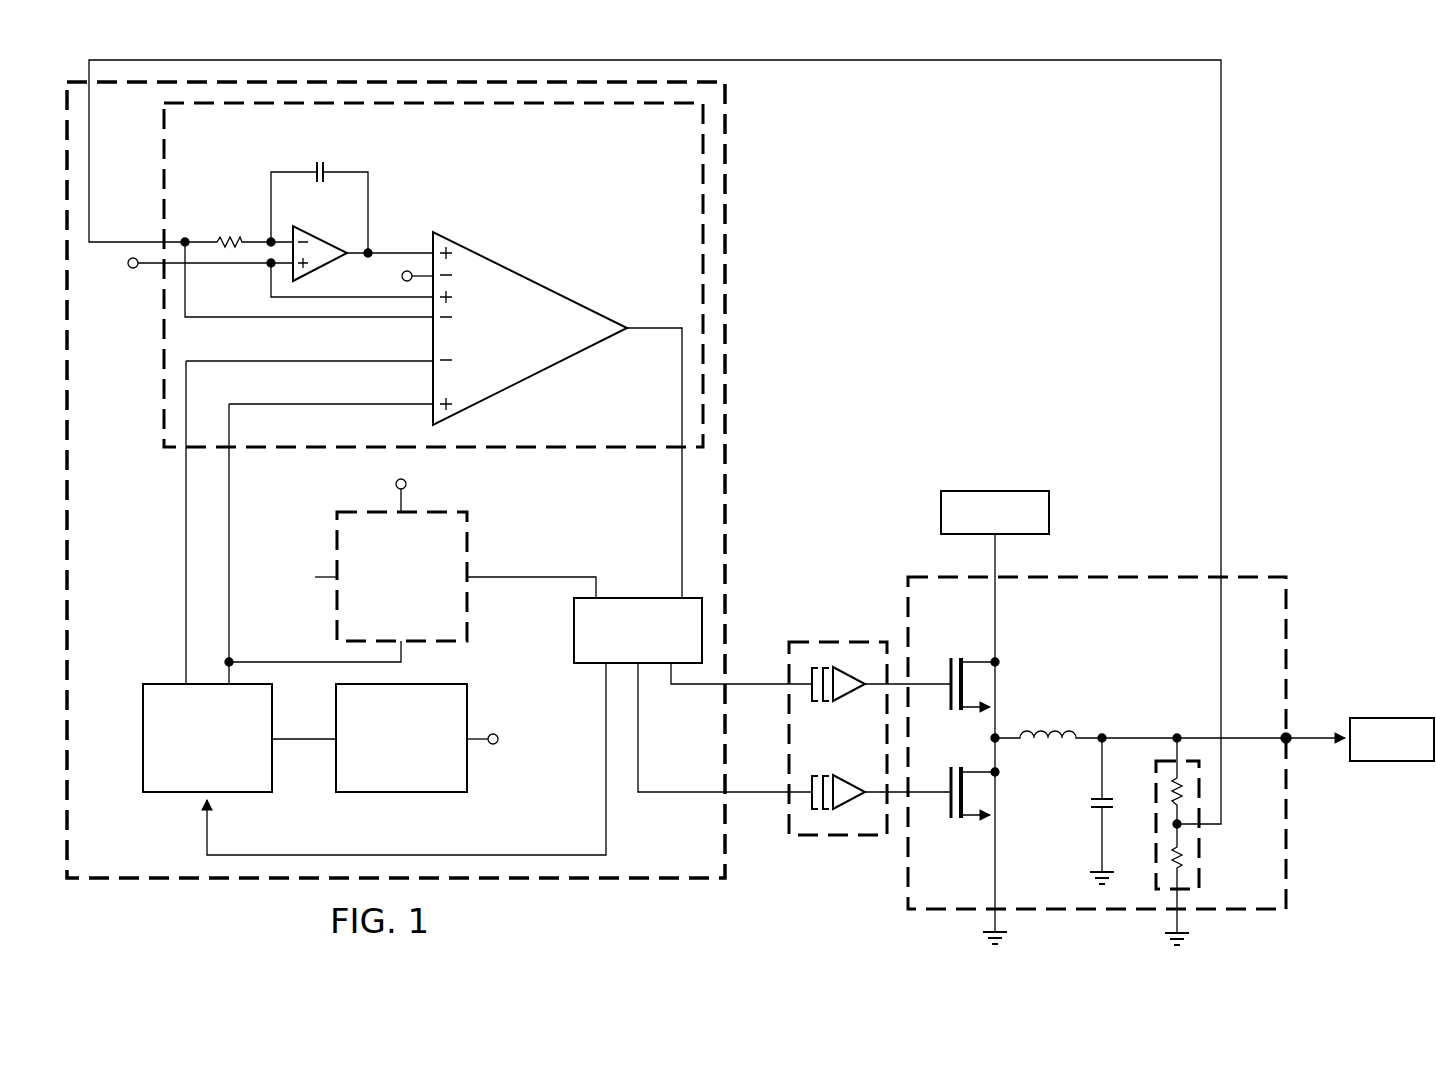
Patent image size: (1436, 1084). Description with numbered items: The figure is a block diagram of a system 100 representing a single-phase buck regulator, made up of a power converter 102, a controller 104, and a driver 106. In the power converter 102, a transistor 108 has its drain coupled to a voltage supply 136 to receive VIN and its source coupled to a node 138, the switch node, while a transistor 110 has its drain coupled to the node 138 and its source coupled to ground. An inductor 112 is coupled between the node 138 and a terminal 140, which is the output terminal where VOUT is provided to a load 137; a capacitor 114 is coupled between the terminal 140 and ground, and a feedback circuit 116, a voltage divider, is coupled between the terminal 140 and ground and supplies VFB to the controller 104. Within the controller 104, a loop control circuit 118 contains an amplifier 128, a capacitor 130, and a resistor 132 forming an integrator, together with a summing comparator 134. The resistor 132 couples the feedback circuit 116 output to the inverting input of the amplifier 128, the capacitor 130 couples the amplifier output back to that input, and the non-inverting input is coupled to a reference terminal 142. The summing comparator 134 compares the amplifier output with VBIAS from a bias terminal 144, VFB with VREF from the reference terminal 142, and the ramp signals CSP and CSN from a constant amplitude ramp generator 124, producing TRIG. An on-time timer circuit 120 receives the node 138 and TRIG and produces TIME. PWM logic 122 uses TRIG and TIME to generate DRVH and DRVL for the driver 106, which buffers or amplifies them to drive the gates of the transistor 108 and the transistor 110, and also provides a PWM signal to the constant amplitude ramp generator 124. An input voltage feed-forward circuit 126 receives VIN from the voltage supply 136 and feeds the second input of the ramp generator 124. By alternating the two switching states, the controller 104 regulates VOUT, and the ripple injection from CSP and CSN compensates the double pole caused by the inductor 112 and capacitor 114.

The system 100 is at (1310, 121).
The power converter 102 is at (1150, 574).
The controller 104 is at (729, 245).
The driver 106 is at (849, 640).
The transistor 108 is at (947, 668).
The transistor 110 is at (947, 806).
The inductor 112 is at (1048, 726).
The capacitor 114 is at (1093, 804).
The feedback circuit 116 is at (1207, 836).
The loop control circuit 118 is at (163, 369).
The on-time timer circuit 120 is at (412, 587).
The pulse width modulation (PWM) logic 122 is at (574, 634).
The constant amplitude ramp generator 124 is at (143, 757).
The input voltage feed-forward circuit 126 is at (399, 797).
The amplifier 128 is at (314, 236).
The capacitor 130 is at (318, 162).
The resistor 132 is at (232, 236).
The summing comparator 134 is at (520, 274).
The voltage supply 136 is at (1005, 490).
The load 137 is at (1392, 763).
The node 138 is at (396, 484).
The terminal 140 is at (1281, 734).
The reference terminal 142 is at (133, 270).
The bias terminal 144 is at (405, 268).